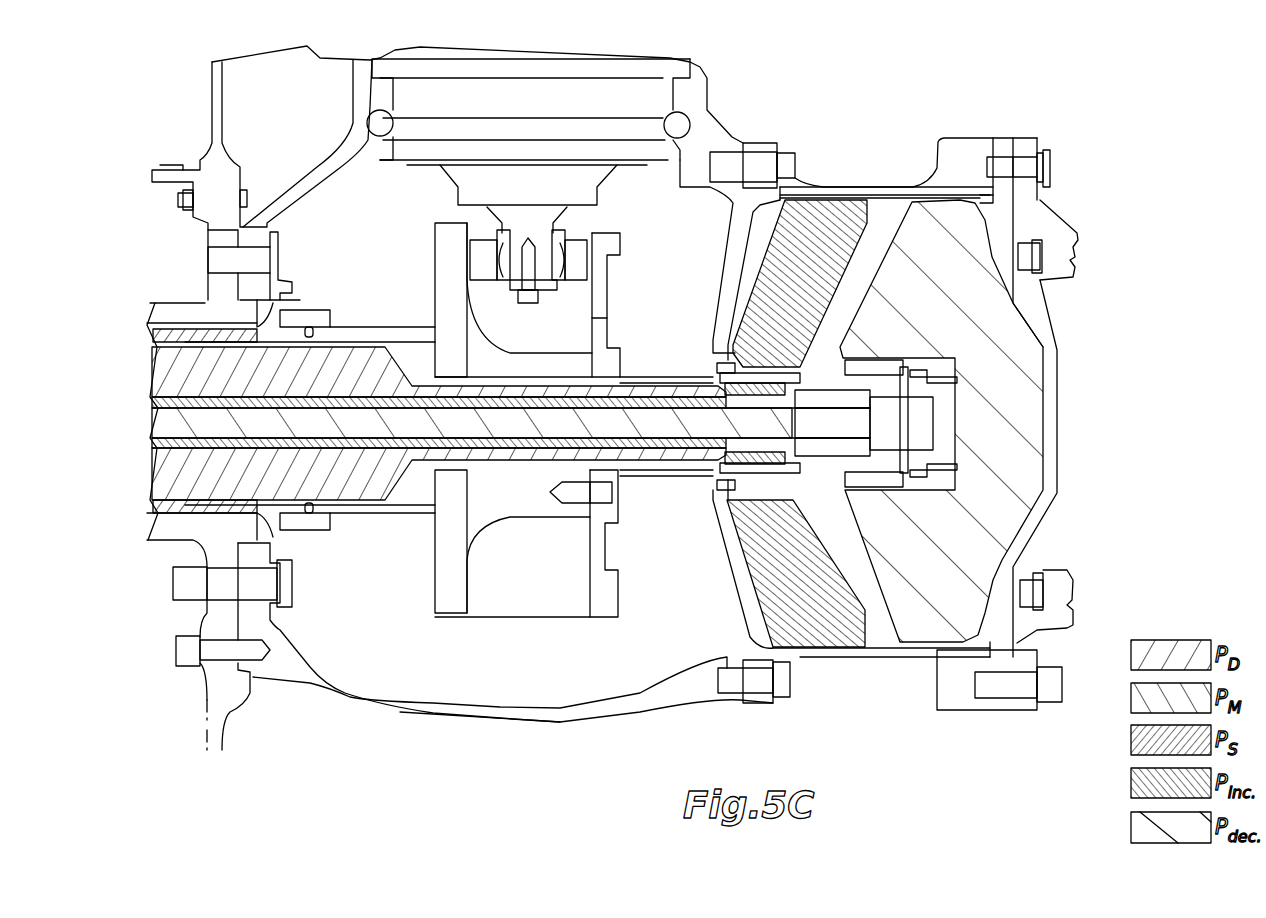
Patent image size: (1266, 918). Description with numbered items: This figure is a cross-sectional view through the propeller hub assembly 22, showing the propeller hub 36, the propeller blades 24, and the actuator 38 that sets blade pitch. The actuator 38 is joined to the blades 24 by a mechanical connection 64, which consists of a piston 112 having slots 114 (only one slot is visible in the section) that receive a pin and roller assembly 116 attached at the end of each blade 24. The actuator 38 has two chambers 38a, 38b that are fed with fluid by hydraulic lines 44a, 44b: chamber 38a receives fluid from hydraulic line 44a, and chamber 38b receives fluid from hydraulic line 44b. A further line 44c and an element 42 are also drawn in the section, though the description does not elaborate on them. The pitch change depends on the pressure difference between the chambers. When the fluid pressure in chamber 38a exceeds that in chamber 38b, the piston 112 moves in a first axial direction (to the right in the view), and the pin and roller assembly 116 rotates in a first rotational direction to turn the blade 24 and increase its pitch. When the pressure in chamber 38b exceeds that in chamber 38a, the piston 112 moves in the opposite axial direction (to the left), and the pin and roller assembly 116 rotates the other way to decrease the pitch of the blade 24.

The hub assembly 22 is at (393, 715).
The propeller blades 24 is at (495, 65).
The propeller hub 36 is at (600, 706).
The actuator 38 is at (812, 172).
The chamber 38a is at (818, 615).
The chamber 38b is at (940, 620).
The bearing housing 42 is at (163, 300).
The hydraulic line 44a is at (160, 397).
The hydraulic line 44b is at (160, 425).
The outer shaft lower 44c is at (160, 463).
The mechanical connection 64 is at (628, 368).
The piston 112 is at (840, 546).
The slots 114 is at (487, 305).
The pin and roller assembly 116 is at (492, 258).